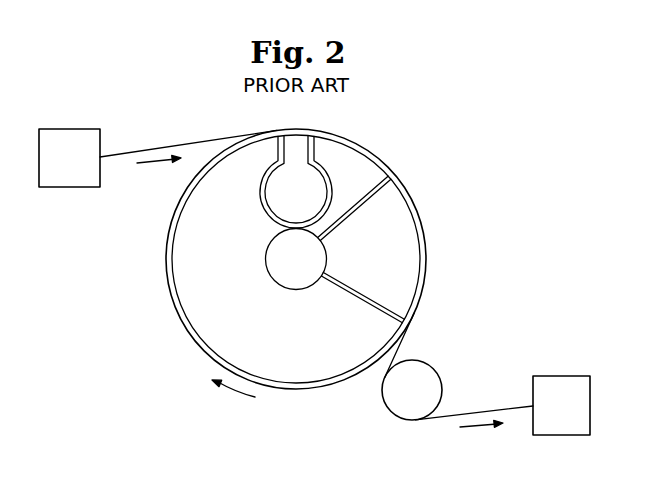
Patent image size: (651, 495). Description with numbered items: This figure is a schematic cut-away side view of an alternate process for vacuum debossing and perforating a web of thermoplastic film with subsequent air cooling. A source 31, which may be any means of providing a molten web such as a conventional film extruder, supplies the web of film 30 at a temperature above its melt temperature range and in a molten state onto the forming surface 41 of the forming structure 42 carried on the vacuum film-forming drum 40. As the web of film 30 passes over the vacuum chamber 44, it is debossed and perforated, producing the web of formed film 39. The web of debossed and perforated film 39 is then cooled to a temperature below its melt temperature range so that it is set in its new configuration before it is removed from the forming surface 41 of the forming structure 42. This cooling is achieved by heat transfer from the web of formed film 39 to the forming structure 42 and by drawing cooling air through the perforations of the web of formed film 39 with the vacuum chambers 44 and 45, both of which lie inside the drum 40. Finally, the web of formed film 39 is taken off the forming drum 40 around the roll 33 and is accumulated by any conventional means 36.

The web of film 30 is at (216, 137).
The source of web of film 31 is at (80, 129).
The roll 33 is at (430, 364).
The conventional means 36 is at (566, 376).
The web of formed film 39 is at (502, 406).
The vacuum film-forming drum 40 is at (430, 154).
The forming surface 41 is at (173, 305).
The forming structure 42 is at (169, 228).
The vacuum chamber 44 is at (273, 194).
The vacuum chamber 45 is at (367, 292).